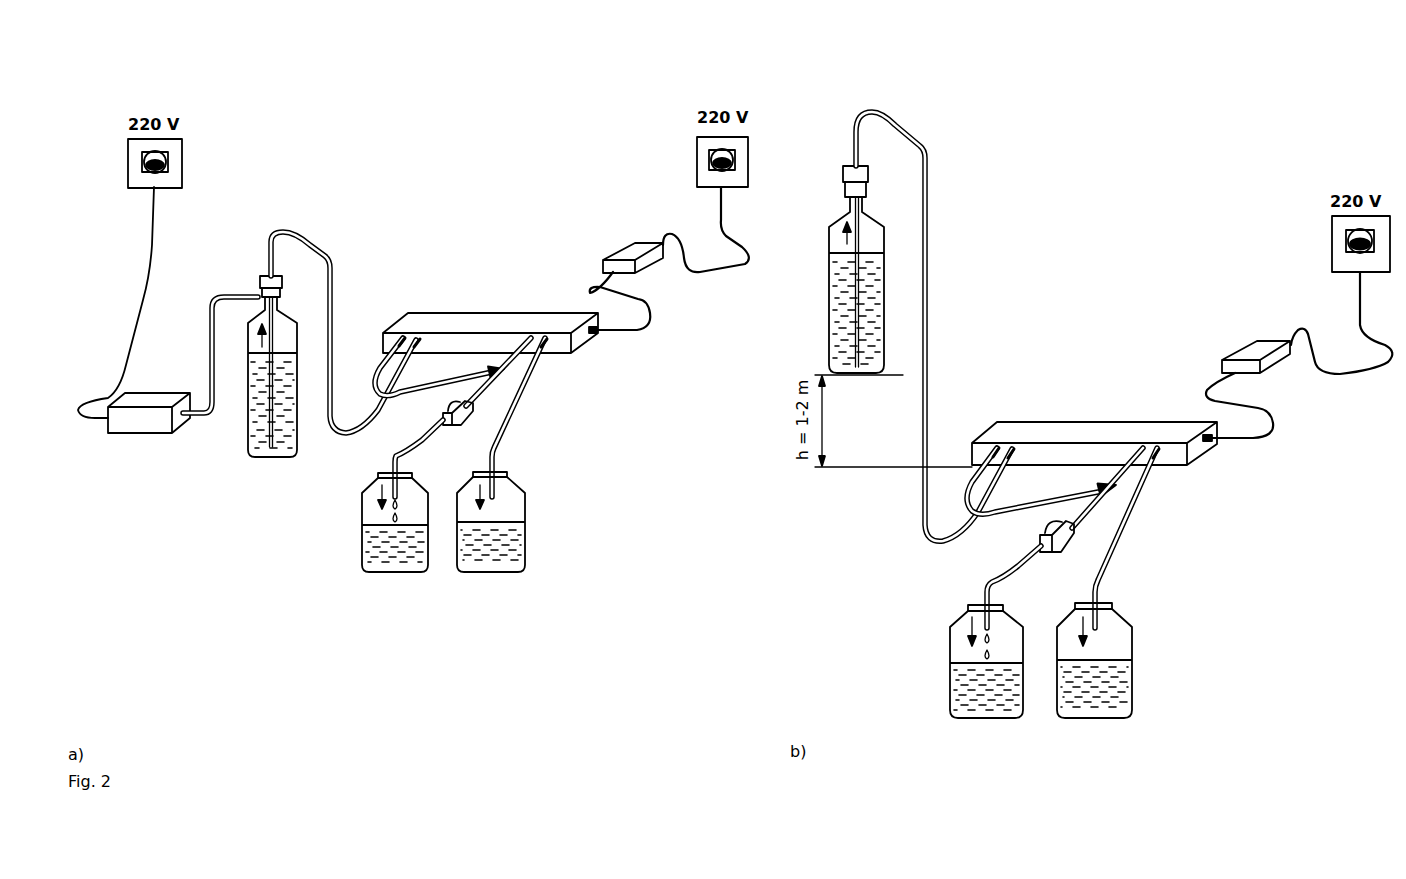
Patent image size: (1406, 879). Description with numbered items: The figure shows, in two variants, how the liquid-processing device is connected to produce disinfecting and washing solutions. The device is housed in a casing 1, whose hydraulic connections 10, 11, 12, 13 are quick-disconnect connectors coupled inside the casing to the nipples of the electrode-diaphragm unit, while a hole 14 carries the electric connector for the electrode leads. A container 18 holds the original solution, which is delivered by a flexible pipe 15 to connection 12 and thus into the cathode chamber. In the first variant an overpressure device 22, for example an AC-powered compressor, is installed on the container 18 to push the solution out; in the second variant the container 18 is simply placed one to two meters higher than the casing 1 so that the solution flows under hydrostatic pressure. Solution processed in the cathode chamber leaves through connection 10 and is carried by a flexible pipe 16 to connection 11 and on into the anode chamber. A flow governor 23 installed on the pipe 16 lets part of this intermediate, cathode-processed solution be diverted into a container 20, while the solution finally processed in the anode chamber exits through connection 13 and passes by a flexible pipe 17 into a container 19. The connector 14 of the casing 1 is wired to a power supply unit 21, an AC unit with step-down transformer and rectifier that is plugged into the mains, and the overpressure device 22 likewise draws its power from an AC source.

The casing 1 is at (458, 320).
The hole (hydraulic connection) 10 is at (528, 338).
The hole (hydraulic connection) 11 is at (401, 338).
The hole (quick-disconnect connection) 12 is at (420, 338).
The hole (hydraulic connection) 13 is at (548, 348).
The hole (electric connector) 14 is at (597, 333).
The flexible pipe 15 is at (342, 433).
The flexible pipe 16 is at (423, 390).
The flexible pipe 17 is at (502, 445).
The container for the original solution 18 is at (255, 432).
The container for the processed product 19 is at (513, 532).
The container for the intermediate product 20 is at (375, 535).
The power supply unit 21 is at (622, 253).
The device for creating overpressure 22 is at (148, 427).
The flow governor 23 is at (460, 417).